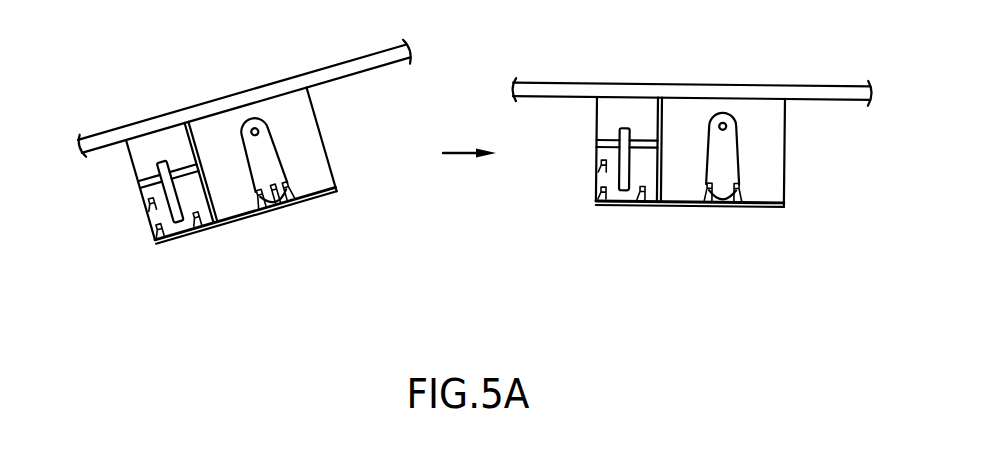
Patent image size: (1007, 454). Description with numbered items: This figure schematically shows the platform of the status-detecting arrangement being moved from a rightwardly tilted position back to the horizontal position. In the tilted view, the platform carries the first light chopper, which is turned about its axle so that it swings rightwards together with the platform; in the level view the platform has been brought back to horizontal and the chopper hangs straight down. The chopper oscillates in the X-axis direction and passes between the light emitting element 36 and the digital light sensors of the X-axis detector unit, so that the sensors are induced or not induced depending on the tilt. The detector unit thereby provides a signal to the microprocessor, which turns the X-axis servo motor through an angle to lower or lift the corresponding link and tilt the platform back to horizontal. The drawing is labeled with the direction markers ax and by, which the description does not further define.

The light emitting element 36 is at (292, 181).
The axis direction ax is at (228, 212).
The axis direction by is at (174, 247).